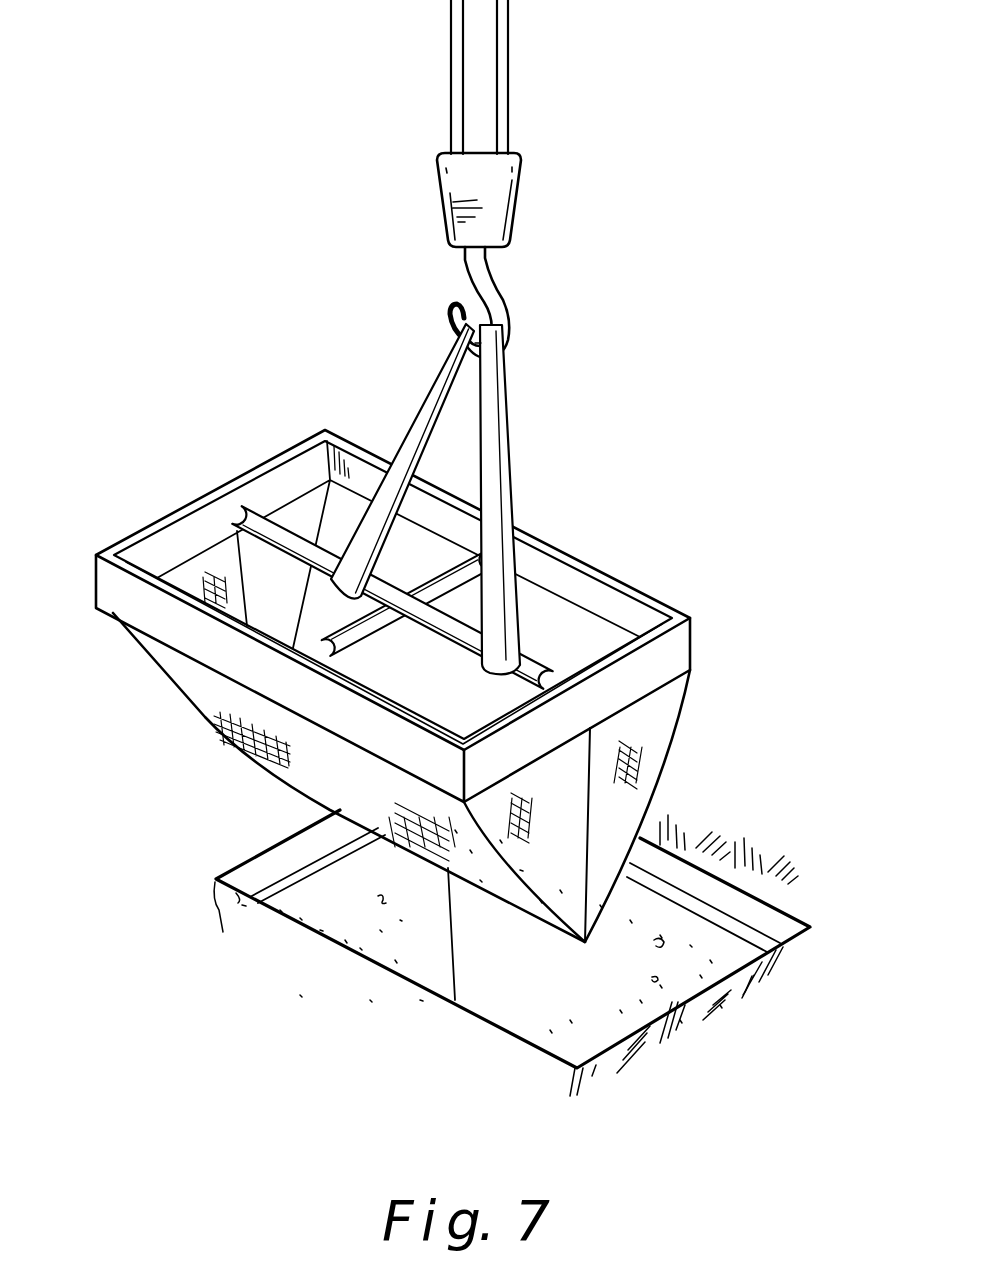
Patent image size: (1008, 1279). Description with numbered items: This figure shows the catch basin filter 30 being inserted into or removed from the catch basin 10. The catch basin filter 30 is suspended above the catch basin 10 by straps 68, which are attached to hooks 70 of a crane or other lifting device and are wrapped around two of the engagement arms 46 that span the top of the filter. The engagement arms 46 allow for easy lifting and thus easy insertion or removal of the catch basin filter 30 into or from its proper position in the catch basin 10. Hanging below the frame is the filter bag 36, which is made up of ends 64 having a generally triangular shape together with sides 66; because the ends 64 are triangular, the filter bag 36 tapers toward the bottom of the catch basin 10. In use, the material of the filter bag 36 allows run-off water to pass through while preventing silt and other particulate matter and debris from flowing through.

The catch basin 10 is at (367, 982).
The catch basin filter 30 is at (486, 686).
The filter bag 36 is at (650, 763).
The engagement arms 46 is at (263, 518).
The ends 64 is at (543, 880).
The sides 66 is at (232, 743).
The straps 68 is at (423, 414).
The hooks 70 is at (503, 293).